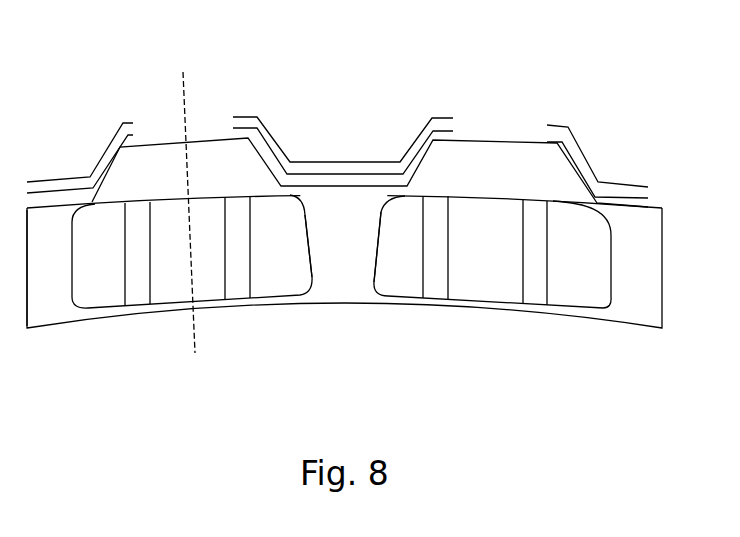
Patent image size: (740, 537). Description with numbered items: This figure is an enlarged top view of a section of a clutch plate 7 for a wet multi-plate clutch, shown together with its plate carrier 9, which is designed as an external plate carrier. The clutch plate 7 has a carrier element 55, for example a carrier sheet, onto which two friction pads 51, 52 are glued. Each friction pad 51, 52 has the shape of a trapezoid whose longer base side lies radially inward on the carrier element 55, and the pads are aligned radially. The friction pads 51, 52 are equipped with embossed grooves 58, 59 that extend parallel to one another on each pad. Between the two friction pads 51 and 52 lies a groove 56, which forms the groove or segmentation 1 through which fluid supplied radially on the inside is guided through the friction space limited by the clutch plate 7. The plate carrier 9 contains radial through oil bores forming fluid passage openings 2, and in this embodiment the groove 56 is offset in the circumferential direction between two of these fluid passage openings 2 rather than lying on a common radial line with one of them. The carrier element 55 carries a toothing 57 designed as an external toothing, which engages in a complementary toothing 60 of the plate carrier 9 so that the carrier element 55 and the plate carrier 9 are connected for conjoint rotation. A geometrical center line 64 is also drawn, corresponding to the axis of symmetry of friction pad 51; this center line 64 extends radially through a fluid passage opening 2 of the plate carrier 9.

The groove 1 is at (345, 278).
The fluid passage opening 2 is at (208, 118).
The clutch plate 7 is at (630, 338).
The plate carrier 9 is at (615, 165).
The friction pad 51 is at (108, 300).
The friction pad 52 is at (491, 305).
The carrier element 55 is at (45, 308).
The groove 56 is at (312, 267).
The toothing 57 is at (280, 165).
The embossed groove 58 is at (442, 277).
The embossed groove 59 is at (542, 280).
The toothing 60 is at (107, 150).
The geometrical center line 64 is at (192, 87).